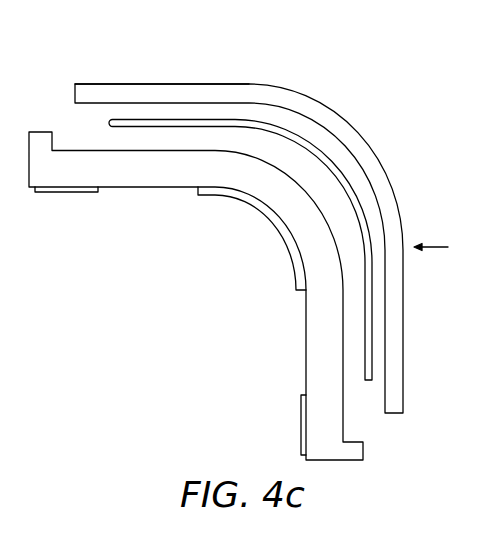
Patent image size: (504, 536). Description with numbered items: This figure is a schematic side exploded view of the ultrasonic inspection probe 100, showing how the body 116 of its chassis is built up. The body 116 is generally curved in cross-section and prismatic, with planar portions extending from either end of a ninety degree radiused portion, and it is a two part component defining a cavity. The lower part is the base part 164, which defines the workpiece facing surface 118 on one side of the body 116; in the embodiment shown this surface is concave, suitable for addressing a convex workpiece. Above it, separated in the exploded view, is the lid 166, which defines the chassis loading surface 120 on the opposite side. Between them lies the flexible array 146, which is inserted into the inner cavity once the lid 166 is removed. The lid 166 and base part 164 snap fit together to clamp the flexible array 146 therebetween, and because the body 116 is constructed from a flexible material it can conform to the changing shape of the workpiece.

The first ultrasonic inspection probe 100 is at (322, 72).
The chassis loading surface 120 is at (221, 83).
The lid 166 is at (151, 83).
The flexible array 146 is at (367, 337).
The base part 164 is at (160, 176).
The workpiece facing surface 118 is at (117, 189).
The body 116 is at (182, 217).